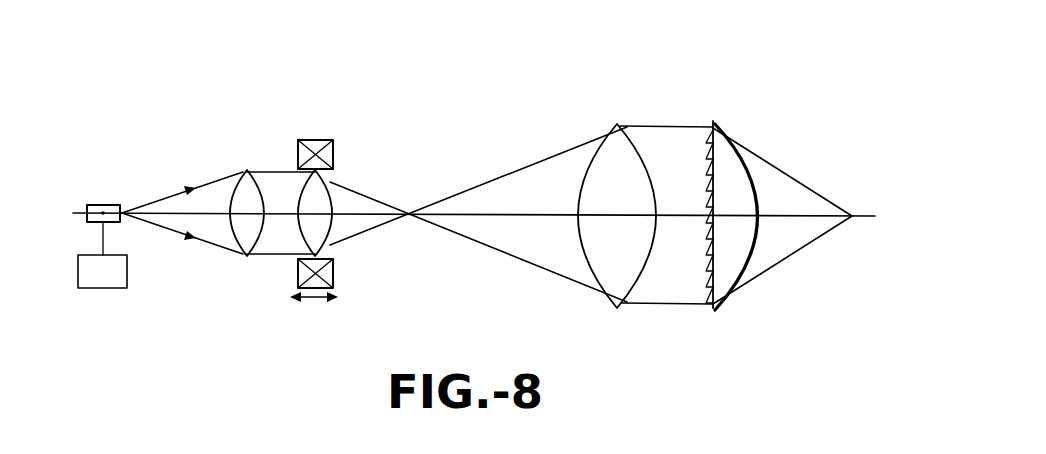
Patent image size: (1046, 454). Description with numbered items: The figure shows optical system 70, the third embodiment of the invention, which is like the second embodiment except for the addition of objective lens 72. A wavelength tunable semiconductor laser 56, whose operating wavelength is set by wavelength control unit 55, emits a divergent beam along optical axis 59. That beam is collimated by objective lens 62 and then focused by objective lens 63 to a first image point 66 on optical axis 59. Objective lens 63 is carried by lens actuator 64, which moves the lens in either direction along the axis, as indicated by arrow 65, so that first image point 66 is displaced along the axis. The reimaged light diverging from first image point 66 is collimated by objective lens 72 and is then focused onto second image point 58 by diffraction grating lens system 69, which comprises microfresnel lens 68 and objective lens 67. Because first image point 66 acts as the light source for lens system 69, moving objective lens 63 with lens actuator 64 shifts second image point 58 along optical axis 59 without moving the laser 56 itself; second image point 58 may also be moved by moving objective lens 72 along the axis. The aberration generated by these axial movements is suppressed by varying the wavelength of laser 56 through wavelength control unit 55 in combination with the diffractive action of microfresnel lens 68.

The wavelength control unit 55 is at (102, 255).
The wavelength tunable semiconductor laser 56 is at (107, 205).
The second image point 58 is at (854, 214).
The optical axis 59 is at (503, 215).
The objective lens 62 is at (247, 168).
The objective lens 63 is at (329, 184).
The lens actuator 64 is at (298, 268).
The arrow 65 is at (315, 300).
The first image point 66 is at (412, 212).
The objective lens 67 is at (724, 127).
The microfresnel lens 68 is at (712, 126).
The diffraction grating lens system 69 is at (770, 116).
The optical system 70 is at (698, 52).
The objective lens 72 is at (616, 124).